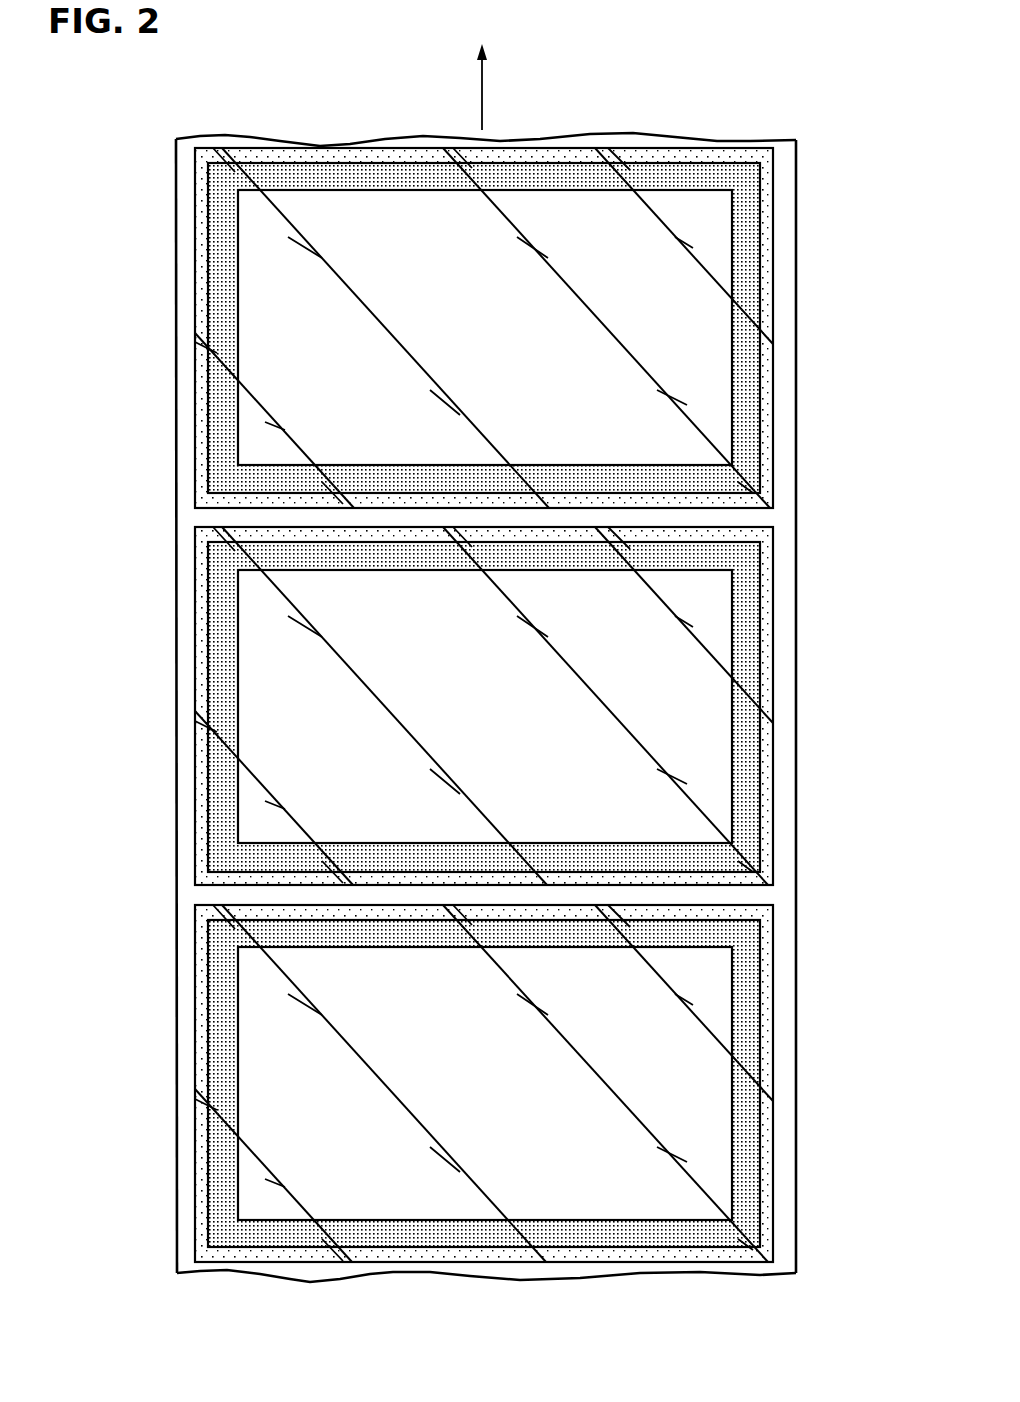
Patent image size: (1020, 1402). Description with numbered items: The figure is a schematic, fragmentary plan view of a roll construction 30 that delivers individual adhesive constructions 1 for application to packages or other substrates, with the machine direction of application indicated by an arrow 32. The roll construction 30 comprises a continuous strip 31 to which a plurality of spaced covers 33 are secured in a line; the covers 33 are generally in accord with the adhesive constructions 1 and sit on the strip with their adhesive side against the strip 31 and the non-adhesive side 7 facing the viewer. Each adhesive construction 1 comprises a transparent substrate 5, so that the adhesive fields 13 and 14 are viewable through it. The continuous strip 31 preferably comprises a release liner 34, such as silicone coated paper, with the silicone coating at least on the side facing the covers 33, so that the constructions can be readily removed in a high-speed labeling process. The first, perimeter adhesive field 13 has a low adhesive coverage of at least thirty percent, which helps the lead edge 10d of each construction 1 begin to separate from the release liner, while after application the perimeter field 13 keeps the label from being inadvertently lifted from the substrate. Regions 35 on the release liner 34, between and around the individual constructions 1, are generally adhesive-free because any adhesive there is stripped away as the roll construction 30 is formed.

The adhesive construction 1 is at (492, 342).
The transparent substrate 5 is at (410, 263).
The non-adhesive side 7 is at (339, 394).
The cover 33 is at (585, 399).
The lead edge 10d is at (611, 148).
The first (perimeter) adhesive field 13 is at (767, 390).
The adhesive field 14 is at (227, 240).
The adhesive construction (roll construction) 30 is at (823, 194).
The continuous strip 31 is at (184, 283).
The arrow (machine direction) 32 is at (482, 98).
The release liner 34 is at (788, 863).
The regions 35 is at (184, 365).